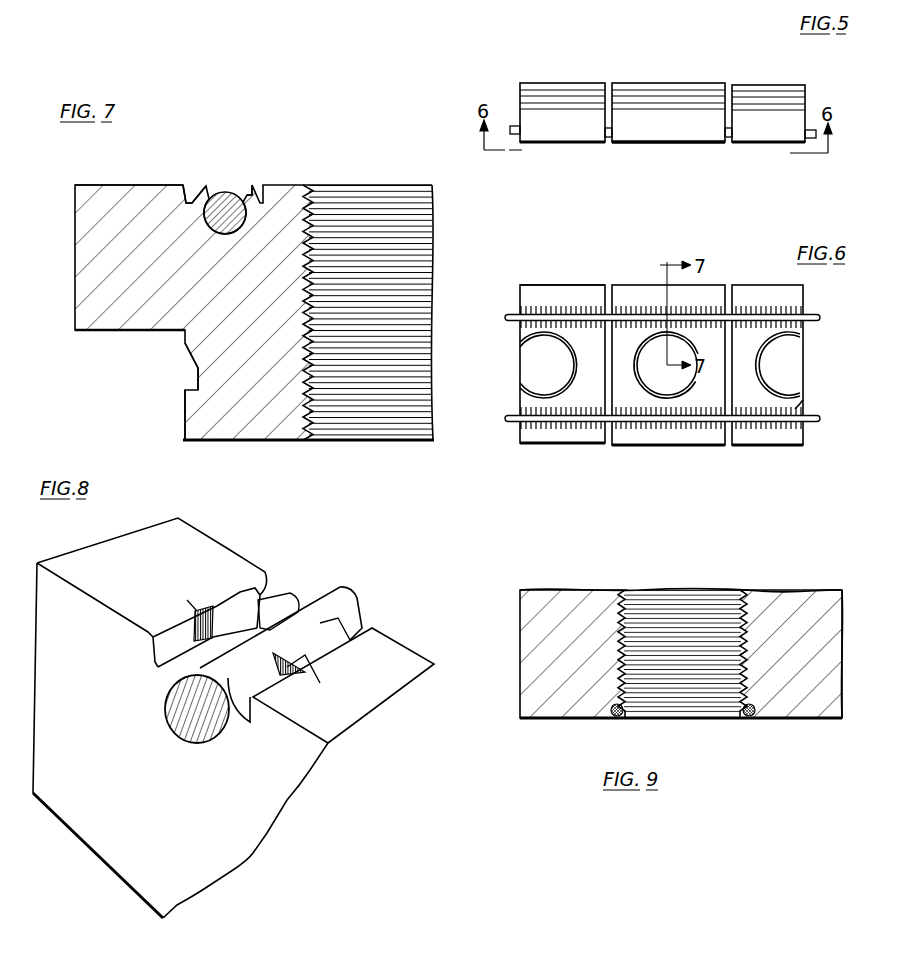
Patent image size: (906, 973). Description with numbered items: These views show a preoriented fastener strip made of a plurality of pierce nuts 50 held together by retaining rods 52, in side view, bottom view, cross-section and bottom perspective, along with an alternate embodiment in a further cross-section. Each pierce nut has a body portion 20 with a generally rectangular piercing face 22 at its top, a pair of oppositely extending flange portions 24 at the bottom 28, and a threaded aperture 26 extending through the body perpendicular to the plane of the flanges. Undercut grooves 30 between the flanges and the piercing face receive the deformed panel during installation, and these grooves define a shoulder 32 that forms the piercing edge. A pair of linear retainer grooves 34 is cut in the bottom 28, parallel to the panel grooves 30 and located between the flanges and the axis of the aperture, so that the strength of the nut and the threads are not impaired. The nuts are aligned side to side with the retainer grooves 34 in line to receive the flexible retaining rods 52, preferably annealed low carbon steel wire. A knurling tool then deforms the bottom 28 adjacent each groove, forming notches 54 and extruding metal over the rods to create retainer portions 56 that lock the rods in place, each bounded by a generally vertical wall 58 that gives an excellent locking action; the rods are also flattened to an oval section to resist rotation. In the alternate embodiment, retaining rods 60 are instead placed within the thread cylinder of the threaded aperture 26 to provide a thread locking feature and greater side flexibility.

In FIG. 7, the body portion 20 is at (203, 344).
In FIG. 9, the body portion 20 is at (546, 706).
In FIG. 5, the piercing face 22 is at (788, 85).
In FIG. 7, the piercing face 22 is at (205, 441).
In FIG. 9, the piercing face 22 is at (583, 590).
In FIG. 5, the flange portions 24 is at (665, 143).
In FIG. 7, the flange portions 24 is at (83, 268).
In FIG. 6, the threaded aperture 26 is at (530, 352).
In FIG. 7, the threaded aperture 26 is at (313, 190).
In FIG. 9, the threaded aperture 26 is at (740, 600).
In FIG. 6, the bottom 28 is at (538, 294).
In FIG. 7, the bottom 28 is at (147, 186).
In FIG. 8, the bottom 28 is at (214, 556).
In FIG. 9, the bottom 28 is at (817, 723).
In FIG. 5, the undercut grooves 30 is at (685, 100).
In FIG. 7, the undercut grooves 30 is at (197, 369).
In FIG. 5, the shoulder 32 is at (528, 83).
In FIG. 7, the shoulder 32 is at (185, 417).
In FIG. 6, the retainer grooves 34 is at (797, 410).
In FIG. 7, the retainer grooves 34 is at (227, 195).
In FIG. 8, the retainer grooves 34 is at (175, 712).
In FIG. 5, the pierce nuts 50 is at (622, 76).
In FIG. 6, the pierce nuts 50 is at (740, 447).
In FIG. 5, the retaining rods 52 is at (516, 128).
In FIG. 6, the retaining rods 52 is at (592, 315).
In FIG. 7, the retaining rods 52 is at (222, 222).
In FIG. 8, the retaining rods 52 is at (347, 598).
In FIG. 7, the notches 54 is at (191, 188).
In FIG. 8, the notches 54 is at (181, 641).
In FIG. 8, the retainer portions 56 is at (296, 603).
In FIG. 8, the vertical wall 58 is at (158, 643).
In FIG. 9, the retaining rods 60 is at (618, 717).